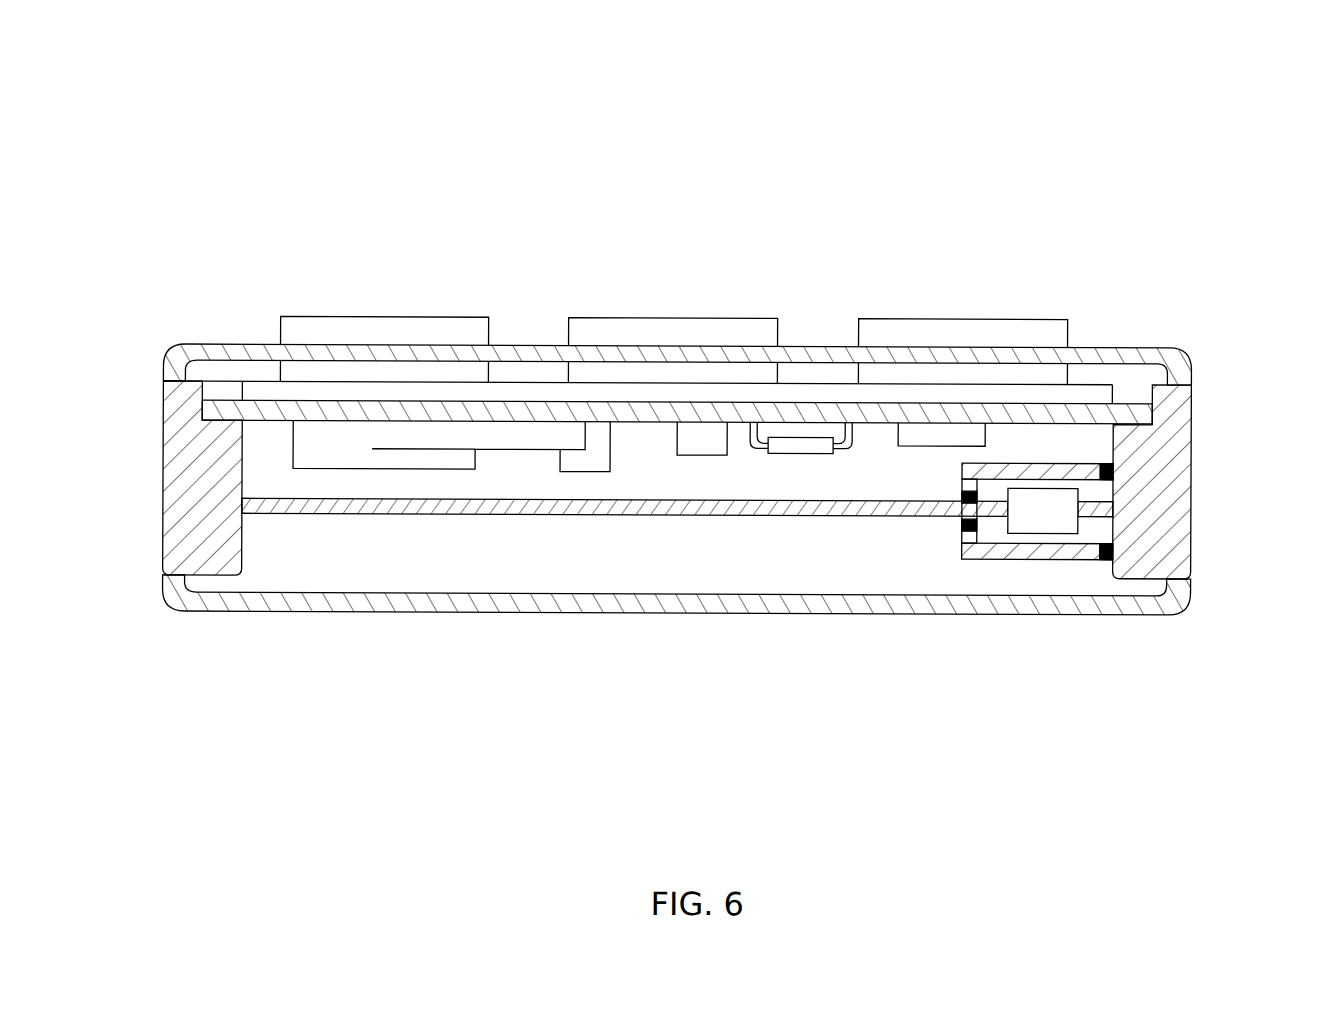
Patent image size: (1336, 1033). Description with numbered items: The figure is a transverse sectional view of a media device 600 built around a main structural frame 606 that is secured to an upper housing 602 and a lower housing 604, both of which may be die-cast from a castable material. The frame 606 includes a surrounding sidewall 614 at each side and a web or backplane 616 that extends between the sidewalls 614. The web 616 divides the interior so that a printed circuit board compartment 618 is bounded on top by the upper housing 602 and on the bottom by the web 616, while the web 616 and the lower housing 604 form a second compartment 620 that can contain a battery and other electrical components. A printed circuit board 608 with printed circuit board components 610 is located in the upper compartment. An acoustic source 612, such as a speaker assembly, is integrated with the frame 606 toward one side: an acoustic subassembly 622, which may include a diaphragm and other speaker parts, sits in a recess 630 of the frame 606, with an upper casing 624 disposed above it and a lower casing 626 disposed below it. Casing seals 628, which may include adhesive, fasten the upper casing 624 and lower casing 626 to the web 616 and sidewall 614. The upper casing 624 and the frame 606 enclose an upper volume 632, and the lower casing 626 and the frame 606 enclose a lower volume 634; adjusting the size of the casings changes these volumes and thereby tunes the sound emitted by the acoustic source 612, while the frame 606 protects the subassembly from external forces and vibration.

The media device 600 is at (1199, 124).
The upper housing 602 is at (1147, 350).
The lower housing 604 is at (1127, 613).
The frame 606 is at (1218, 464).
The printed circuit board 608 is at (377, 405).
The printed circuit board components 610 is at (813, 437).
The acoustic source 612 is at (1032, 578).
The sidewall 614 is at (163, 465).
The backplane 616 is at (490, 515).
The printed circuit board compartment 618 is at (637, 493).
The second compartment 620 is at (637, 562).
The acoustic subassembly 622 is at (1022, 523).
The upper casing 624 is at (1083, 462).
The lower casing 626 is at (1082, 558).
The casing seals 628 is at (1105, 462).
The recess 630 is at (1002, 565).
The upper volume 632 is at (995, 482).
The lower volume 634 is at (985, 537).